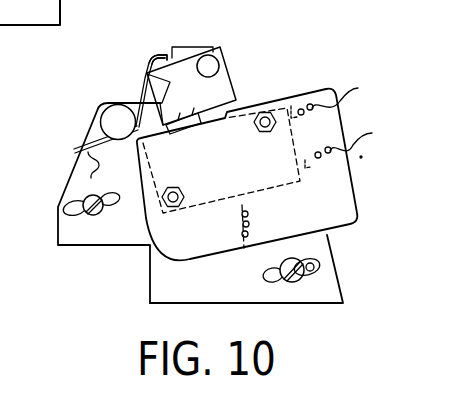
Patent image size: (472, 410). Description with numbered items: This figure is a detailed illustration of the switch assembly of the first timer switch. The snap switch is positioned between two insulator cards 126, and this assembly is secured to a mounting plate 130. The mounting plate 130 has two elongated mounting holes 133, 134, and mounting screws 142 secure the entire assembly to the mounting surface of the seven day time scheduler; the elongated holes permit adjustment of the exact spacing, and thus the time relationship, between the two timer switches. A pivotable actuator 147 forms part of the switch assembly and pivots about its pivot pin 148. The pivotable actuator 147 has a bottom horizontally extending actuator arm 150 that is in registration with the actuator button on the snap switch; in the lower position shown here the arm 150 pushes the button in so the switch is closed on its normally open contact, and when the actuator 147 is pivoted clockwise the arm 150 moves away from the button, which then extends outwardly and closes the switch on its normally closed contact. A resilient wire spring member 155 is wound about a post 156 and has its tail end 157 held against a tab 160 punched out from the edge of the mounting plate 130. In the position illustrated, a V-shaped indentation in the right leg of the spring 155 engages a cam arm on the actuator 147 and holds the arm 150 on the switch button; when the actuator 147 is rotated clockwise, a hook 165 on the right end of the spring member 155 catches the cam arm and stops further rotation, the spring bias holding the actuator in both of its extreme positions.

The insulator cards 126 is at (359, 221).
The mounting plate 130 is at (331, 302).
The elongated mounting hole 133 is at (313, 272).
The elongated mounting hole 134 is at (70, 217).
The mounting screws 142 is at (98, 215).
The pivotable actuator 147 is at (223, 78).
The pivot pin 148 is at (208, 66).
The actuator arm 150 is at (181, 120).
The resilient wire spring member 155 is at (137, 97).
The post 156 is at (101, 122).
The tail end 157 is at (74, 150).
The tab 160 is at (86, 169).
The hook 165 is at (150, 68).